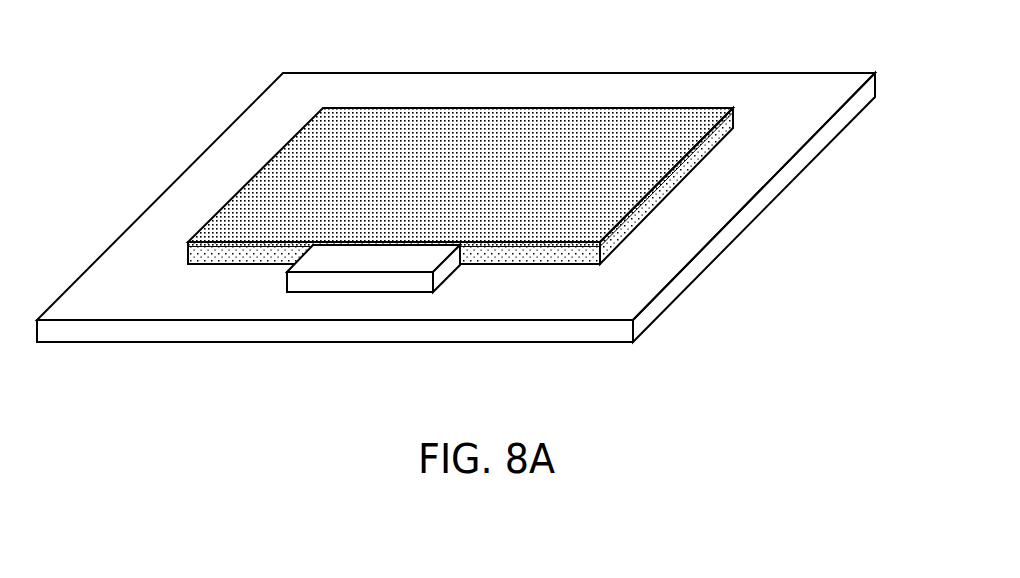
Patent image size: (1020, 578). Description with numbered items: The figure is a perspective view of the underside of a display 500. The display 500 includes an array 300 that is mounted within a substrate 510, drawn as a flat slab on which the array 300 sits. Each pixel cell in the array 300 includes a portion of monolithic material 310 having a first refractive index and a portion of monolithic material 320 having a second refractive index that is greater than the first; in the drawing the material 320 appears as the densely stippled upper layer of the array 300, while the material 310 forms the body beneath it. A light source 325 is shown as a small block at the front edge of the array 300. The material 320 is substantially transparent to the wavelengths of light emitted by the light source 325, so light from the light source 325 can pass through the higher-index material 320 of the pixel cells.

The display 500 is at (574, 50).
The substrate 510 is at (788, 93).
The array 300 is at (477, 171).
The monolithic material 310 is at (660, 183).
The monolithic material 320 is at (710, 142).
The light source 325 is at (451, 265).